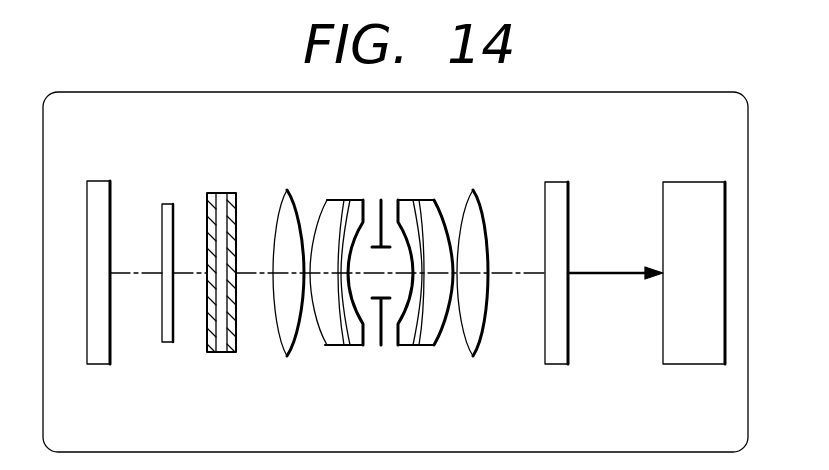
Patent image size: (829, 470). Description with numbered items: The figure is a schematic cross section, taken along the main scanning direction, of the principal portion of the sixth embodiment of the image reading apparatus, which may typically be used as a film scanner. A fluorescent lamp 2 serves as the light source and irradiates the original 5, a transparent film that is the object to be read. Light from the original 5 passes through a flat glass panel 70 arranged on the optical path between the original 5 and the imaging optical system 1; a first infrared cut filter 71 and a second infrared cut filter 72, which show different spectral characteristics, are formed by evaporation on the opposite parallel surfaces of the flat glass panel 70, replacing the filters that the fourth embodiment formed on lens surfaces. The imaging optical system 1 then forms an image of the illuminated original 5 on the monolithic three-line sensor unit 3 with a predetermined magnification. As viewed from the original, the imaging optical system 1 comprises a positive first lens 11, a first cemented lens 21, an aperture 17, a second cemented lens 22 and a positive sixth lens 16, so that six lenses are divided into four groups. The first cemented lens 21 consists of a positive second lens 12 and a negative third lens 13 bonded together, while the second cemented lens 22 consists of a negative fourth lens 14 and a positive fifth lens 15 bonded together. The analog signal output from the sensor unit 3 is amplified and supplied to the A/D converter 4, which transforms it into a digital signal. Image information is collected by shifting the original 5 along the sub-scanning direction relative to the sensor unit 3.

The imaging optical system 1 is at (482, 184).
The fluorescent lamp 2 is at (95, 187).
The monolithic 3-line sensor unit 3 is at (553, 192).
The A/D converter 4 is at (692, 192).
The original 5 is at (167, 210).
The flat glass panel 70 is at (214, 281).
The first infrared cut filter 71 is at (209, 350).
The second infrared cut filter 72 is at (237, 346).
The first lens 11 is at (288, 342).
The second lens 12 is at (321, 345).
The third lens 13 is at (355, 337).
The fourth lens 14 is at (402, 345).
The fifth lens 15 is at (437, 345).
The sixth lens 16 is at (473, 350).
The aperture 17 is at (382, 340).
The first cemented lens 21 is at (333, 322).
The second cemented lens 22 is at (430, 322).